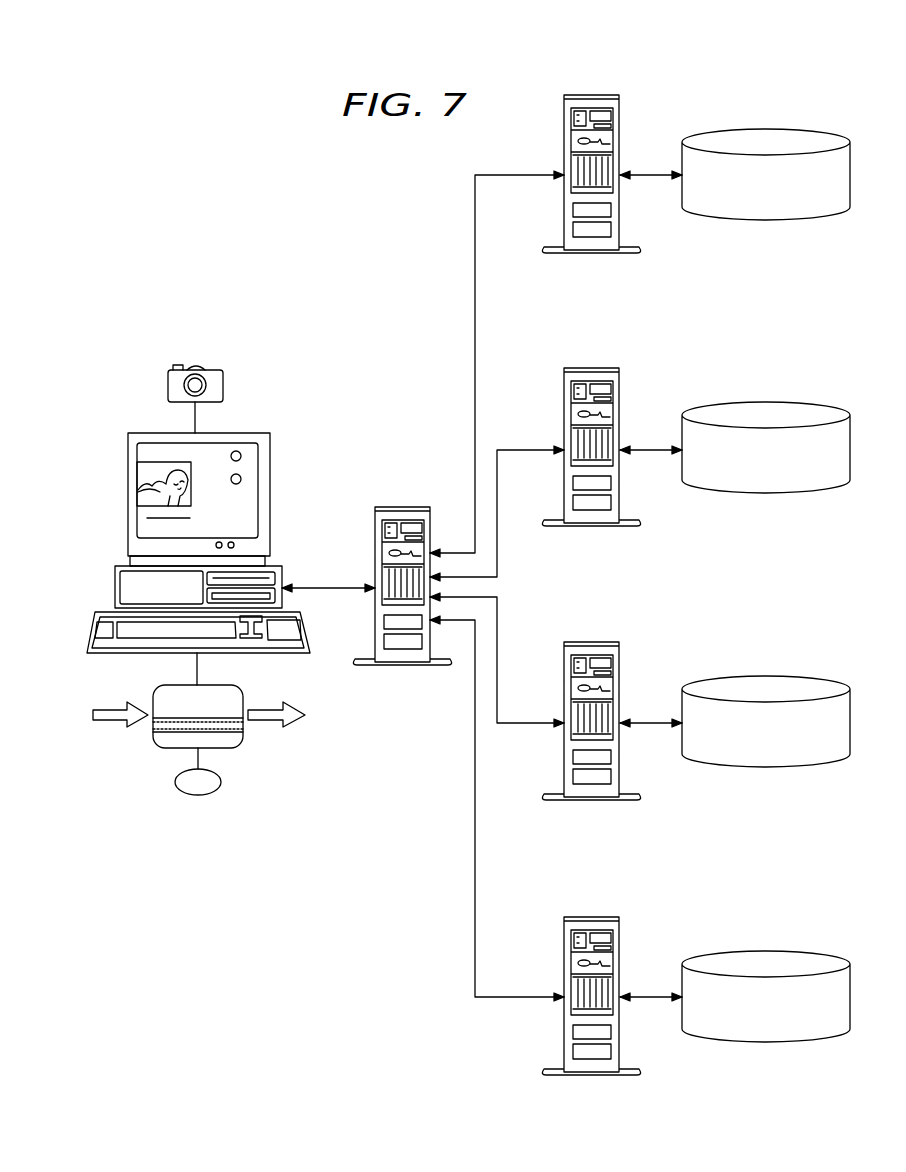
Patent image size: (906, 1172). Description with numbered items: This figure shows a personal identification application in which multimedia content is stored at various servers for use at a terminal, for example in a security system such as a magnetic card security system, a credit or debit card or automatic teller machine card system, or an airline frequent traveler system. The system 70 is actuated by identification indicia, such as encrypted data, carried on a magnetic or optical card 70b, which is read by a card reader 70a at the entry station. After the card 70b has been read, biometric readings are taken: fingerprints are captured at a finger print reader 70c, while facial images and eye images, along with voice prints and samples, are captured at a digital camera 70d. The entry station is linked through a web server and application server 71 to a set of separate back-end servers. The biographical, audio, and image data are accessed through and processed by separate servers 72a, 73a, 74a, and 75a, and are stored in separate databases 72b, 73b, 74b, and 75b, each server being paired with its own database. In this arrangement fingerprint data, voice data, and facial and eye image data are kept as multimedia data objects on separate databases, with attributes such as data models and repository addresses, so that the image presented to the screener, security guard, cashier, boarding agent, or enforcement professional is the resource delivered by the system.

The system 70 is at (191, 342).
The card reader 70a is at (127, 495).
The magnetic or optical card 70b is at (152, 737).
The finger print reader 70c is at (221, 782).
The digital camera 70d is at (168, 386).
The web server / application server 71 is at (402, 507).
The server 72a is at (592, 95).
The database 72b is at (766, 130).
The server 73a is at (592, 368).
The database 73b is at (765, 402).
The server 74a is at (592, 642).
The database 74b is at (765, 677).
The server 75a is at (592, 917).
The database 75b is at (765, 952).